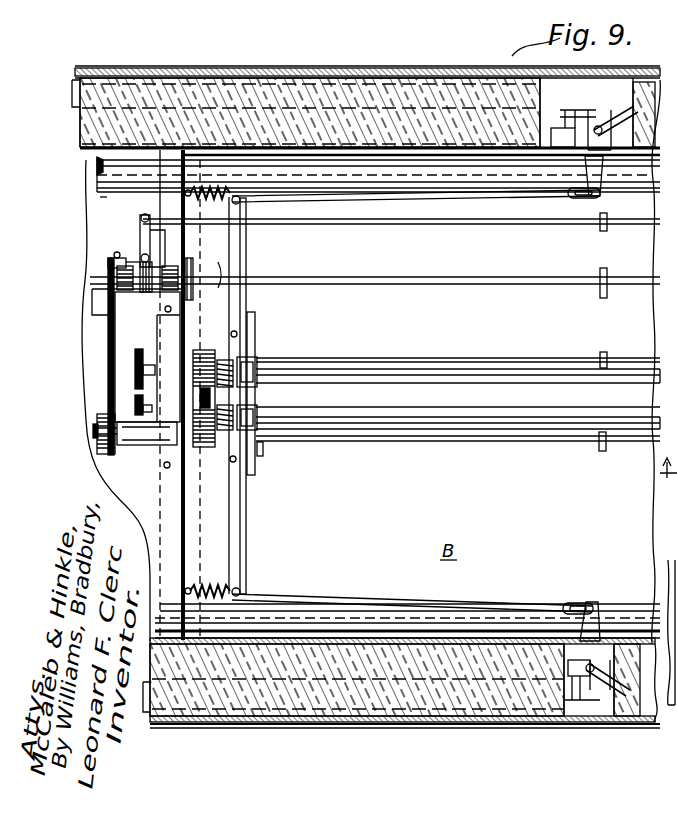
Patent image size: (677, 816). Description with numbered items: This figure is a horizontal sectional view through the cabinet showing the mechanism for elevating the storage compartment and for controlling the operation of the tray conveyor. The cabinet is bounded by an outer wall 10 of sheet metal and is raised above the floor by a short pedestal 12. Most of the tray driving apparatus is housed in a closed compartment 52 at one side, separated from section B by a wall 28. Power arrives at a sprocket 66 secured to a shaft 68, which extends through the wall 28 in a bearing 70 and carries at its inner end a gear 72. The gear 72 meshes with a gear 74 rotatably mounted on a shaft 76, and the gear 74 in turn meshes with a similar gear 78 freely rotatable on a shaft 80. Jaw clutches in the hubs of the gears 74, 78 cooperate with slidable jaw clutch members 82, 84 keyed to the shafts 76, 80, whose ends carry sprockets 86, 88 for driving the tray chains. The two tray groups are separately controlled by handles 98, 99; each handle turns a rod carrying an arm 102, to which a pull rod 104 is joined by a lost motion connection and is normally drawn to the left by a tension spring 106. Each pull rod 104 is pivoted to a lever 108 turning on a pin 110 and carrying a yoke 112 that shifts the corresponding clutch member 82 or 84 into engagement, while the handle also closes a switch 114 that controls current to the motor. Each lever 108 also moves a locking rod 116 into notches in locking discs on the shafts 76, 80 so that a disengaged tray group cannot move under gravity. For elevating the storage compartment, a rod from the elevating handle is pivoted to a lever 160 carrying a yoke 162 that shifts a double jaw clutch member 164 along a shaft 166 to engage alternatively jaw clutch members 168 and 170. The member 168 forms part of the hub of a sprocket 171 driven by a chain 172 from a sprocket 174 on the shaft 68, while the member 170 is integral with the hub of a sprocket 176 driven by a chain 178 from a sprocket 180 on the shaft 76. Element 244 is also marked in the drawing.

The outer wall 10 is at (392, 72).
The pedestal 12 is at (72, 97).
The wall 28 is at (172, 518).
The closed compartment 52 is at (95, 190).
The sprocket 66 is at (95, 440).
The shaft 68 is at (95, 428).
The bearing 70 is at (115, 450).
The gear 72 is at (232, 500).
The gear 74 is at (190, 405).
The shaft 76 is at (330, 422).
The gear 78 is at (180, 333).
The shaft 80 is at (322, 374).
The jaw clutch member 82 is at (290, 440).
The jaw clutch member 84 is at (258, 358).
The sprocket 86 is at (137, 372).
The sprocket 88 is at (113, 345).
The handle 98 is at (615, 700).
The handle 99 is at (617, 100).
The arm 102 is at (598, 190).
The pull rod 104 is at (400, 193).
The tension spring 106 is at (216, 190).
The lever 108 is at (246, 248).
The pin 110 is at (263, 345).
The yoke 112 is at (252, 352).
The switch 114 is at (555, 92).
The locking rod 116 is at (415, 364).
The lever 160 is at (140, 230).
The yoke 162 is at (140, 258).
The double jaw clutch member 164 is at (100, 193).
The shaft 166 is at (218, 268).
The jaw clutch member 168 is at (137, 262).
The jaw clutch member 170 is at (165, 245).
The sprocket 171 is at (95, 282).
The chain 172 is at (110, 300).
The sprocket 174 is at (137, 400).
The sprocket 176 is at (246, 272).
The chain 178 is at (246, 300).
The sprocket 180 is at (165, 445).
The rail 244 is at (516, 183).